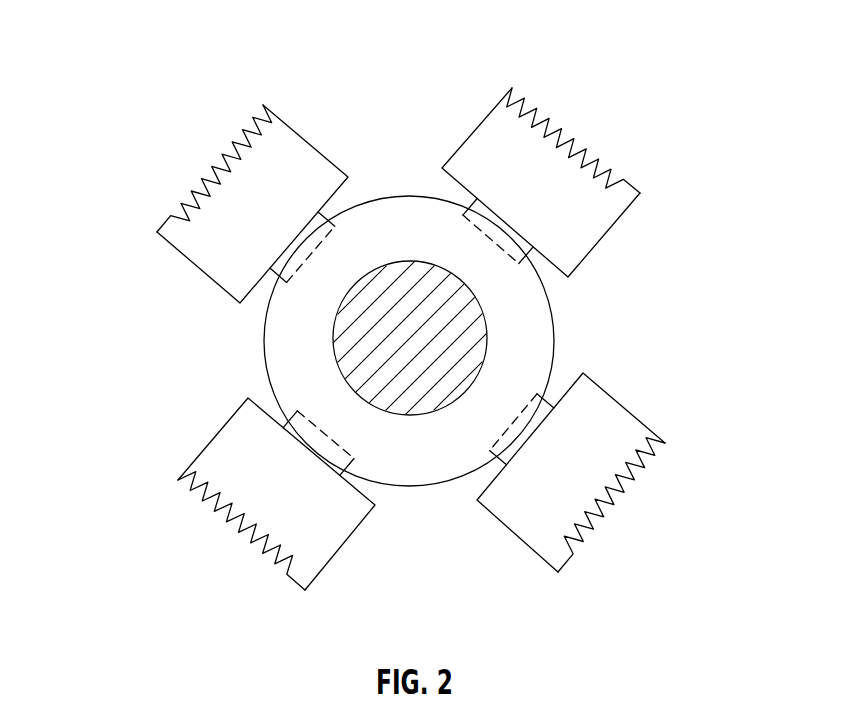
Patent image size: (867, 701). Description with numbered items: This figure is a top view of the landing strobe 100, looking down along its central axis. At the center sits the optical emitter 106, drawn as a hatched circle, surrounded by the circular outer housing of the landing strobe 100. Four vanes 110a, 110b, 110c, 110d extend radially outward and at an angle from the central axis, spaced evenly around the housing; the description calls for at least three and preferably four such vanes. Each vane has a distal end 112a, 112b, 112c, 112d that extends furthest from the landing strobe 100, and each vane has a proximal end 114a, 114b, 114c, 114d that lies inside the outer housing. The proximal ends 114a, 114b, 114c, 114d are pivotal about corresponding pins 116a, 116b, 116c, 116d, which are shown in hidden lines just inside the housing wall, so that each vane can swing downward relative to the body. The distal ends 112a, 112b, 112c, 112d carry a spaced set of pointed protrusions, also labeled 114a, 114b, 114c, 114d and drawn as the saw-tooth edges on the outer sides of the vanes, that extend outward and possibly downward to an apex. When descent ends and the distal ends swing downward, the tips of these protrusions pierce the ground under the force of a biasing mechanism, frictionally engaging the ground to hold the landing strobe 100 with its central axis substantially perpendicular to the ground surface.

The landing strobe 100 is at (645, 38).
The optical emitter 106 is at (488, 335).
The vane 110a is at (347, 540).
The vane 110b is at (625, 408).
The vane 110c is at (475, 130).
The vane 110d is at (204, 273).
The distal end 112a is at (305, 590).
The distal end 112b is at (665, 446).
The distal end 112c is at (512, 88).
The distal end 112d is at (157, 232).
The proximal end / protrusions 114a is at (242, 556).
The proximal end / protrusions 114b is at (623, 519).
The proximal end / protrusions 114c is at (587, 108).
The proximal end / protrusions 114d is at (196, 154).
The pin 116a is at (343, 467).
The pin 116b is at (532, 397).
The pin 116c is at (464, 214).
The pin 116d is at (288, 278).